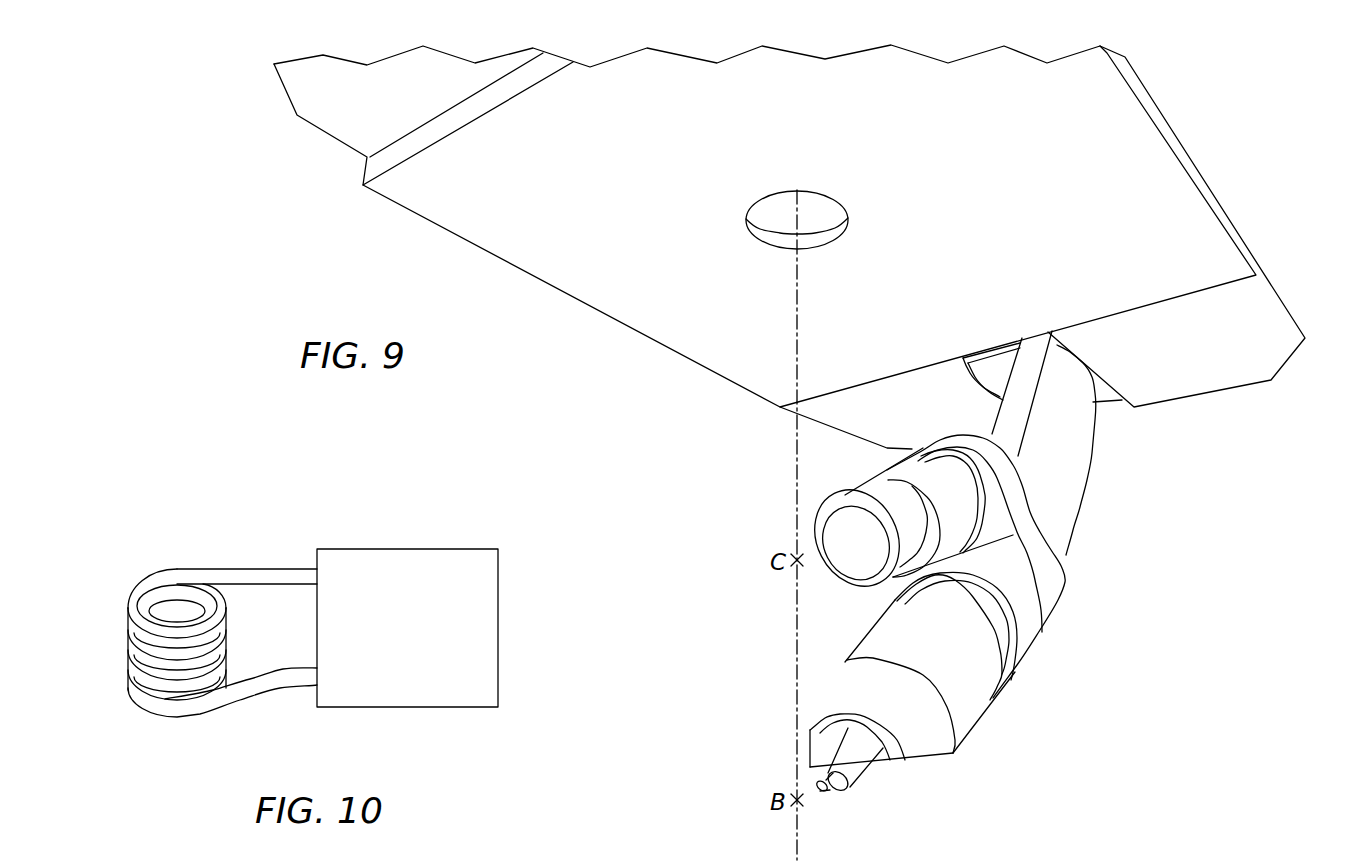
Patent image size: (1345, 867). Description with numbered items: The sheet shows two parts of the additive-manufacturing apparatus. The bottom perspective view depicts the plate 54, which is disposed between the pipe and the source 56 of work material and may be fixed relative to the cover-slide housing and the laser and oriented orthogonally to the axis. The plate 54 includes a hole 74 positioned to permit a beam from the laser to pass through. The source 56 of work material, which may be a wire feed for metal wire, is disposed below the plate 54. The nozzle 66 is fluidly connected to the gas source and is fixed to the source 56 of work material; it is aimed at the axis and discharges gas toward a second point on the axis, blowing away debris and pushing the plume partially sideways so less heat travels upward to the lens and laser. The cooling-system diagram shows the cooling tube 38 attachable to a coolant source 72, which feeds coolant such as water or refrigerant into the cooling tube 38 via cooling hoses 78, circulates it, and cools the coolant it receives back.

In FIG. 9, the plate 54 is at (580, 302).
In FIG. 9, the hole 74 is at (836, 239).
In FIG. 9, the nozzle 66 is at (888, 470).
In FIG. 9, the source of work material 56 is at (990, 717).
In FIG. 10, the coolant source 72 is at (467, 549).
In FIG. 10, the cooling hoses 78 is at (248, 568).
In FIG. 10, the cooling tube 38 is at (128, 622).